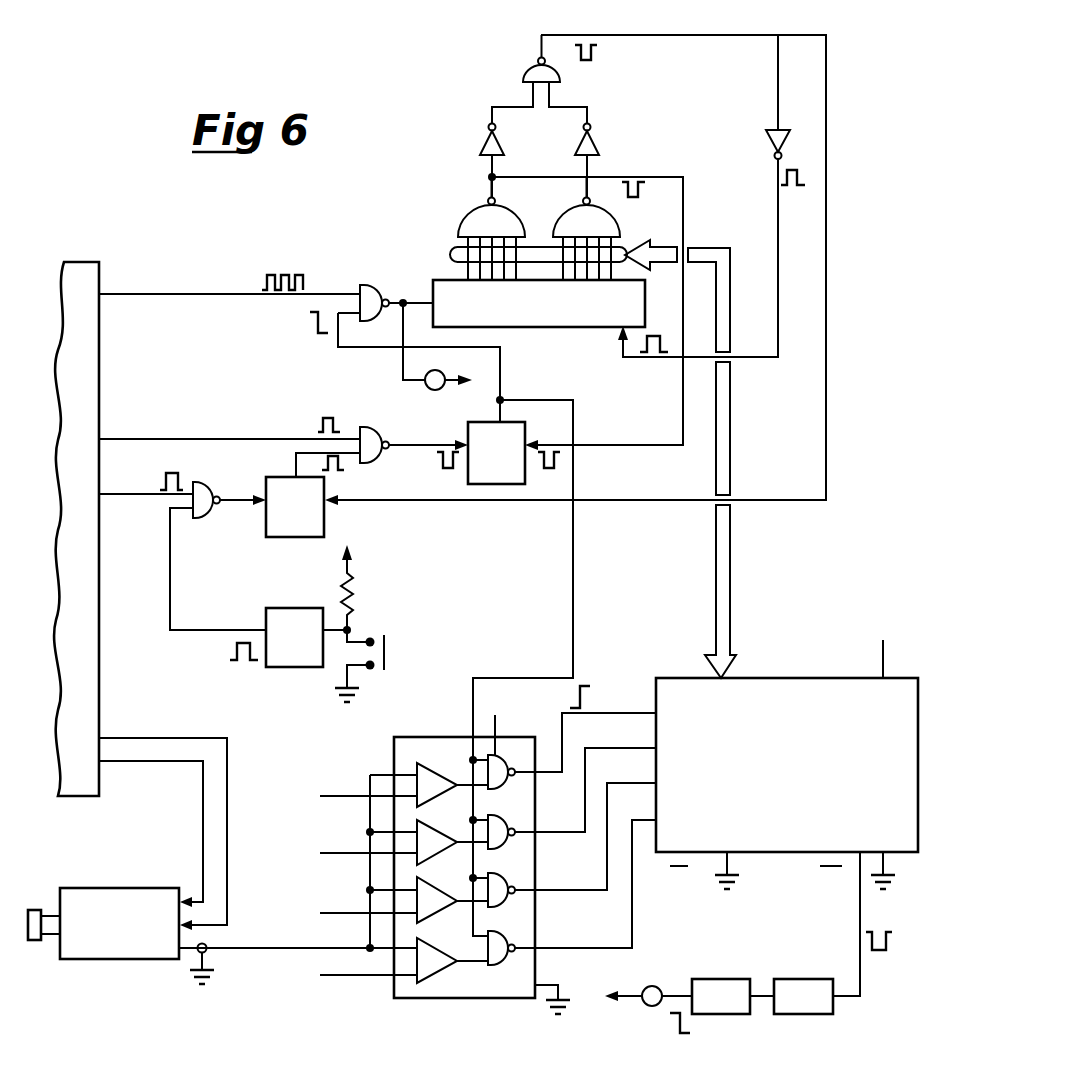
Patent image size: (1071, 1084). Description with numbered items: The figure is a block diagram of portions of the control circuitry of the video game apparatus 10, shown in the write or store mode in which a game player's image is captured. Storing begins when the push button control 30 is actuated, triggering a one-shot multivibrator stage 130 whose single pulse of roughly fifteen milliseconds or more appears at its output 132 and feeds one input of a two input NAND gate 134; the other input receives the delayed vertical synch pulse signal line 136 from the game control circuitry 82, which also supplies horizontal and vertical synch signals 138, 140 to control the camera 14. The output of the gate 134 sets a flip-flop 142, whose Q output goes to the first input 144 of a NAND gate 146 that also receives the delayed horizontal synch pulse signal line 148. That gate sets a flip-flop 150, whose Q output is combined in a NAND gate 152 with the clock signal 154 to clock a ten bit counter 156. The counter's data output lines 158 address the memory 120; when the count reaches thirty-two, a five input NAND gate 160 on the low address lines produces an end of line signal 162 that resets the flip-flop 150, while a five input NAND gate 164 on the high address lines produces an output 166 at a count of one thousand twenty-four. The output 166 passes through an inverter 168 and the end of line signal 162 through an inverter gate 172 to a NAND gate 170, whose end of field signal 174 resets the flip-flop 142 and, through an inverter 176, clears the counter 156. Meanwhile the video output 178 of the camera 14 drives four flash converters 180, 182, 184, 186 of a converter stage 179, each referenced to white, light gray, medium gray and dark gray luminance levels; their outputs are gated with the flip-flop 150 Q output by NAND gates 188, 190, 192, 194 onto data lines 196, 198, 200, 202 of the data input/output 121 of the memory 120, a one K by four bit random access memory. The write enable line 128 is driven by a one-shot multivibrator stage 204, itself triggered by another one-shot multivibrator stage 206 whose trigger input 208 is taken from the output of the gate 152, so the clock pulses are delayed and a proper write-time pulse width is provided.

The video game apparatus 10 is at (406, 194).
The camera 14 is at (98, 959).
The push button control 30 is at (384, 640).
The game control circuitry 82 is at (79, 262).
The memory 120 is at (770, 678).
The data input/output 121 is at (644, 690).
The write enable line 128 is at (858, 916).
The one-shot multivibrator stage 130 is at (282, 608).
The output 132 is at (170, 578).
The two input NAND gate 134 is at (206, 518).
The delayed vertical synch pulse signal line 136 is at (196, 482).
The horizontal synch signal 138 is at (185, 738).
The vertical synch signal 140 is at (180, 762).
The flip-flop 142 is at (324, 518).
The first input 144 is at (376, 462).
The two input NAND gate 146 is at (374, 427).
The delayed horizontal synch pulse signal line 148 is at (190, 439).
The flip-flop 150 is at (480, 413).
The two input NAND gate 152 is at (370, 285).
The clock signal 154 is at (190, 294).
The 10 bit counter 156 is at (540, 327).
The data output lines 158 is at (700, 248).
The five input NAND gate 160 is at (466, 212).
The end of line signal 162 is at (520, 177).
The five input NAND gate 164 is at (562, 212).
The output 166 is at (592, 165).
The inverter 168 is at (598, 143).
The two input NAND gate 170 is at (525, 72).
The inverter gate 172 is at (478, 145).
The end of field signal 174 is at (550, 33).
The inverter 176 is at (766, 140).
The video output 178 is at (257, 950).
The converter stage 179 is at (455, 998).
The flash converter 180 is at (420, 765).
The flash converter 182 is at (420, 822).
The flash converter 184 is at (420, 879).
The flash converter 186 is at (420, 940).
The two input NAND gate 188 is at (505, 788).
The two input NAND gate 190 is at (505, 848).
The two input NAND gate 192 is at (505, 906).
The two input NAND gate 194 is at (505, 964).
The data line 196 is at (640, 713).
The data line 198 is at (638, 748).
The data line 200 is at (642, 783).
The data line 202 is at (652, 820).
The one-shot multivibrator stage 204 is at (803, 1014).
The one-shot multivibrator stage 206 is at (722, 1014).
The trigger input 208 is at (627, 1000).